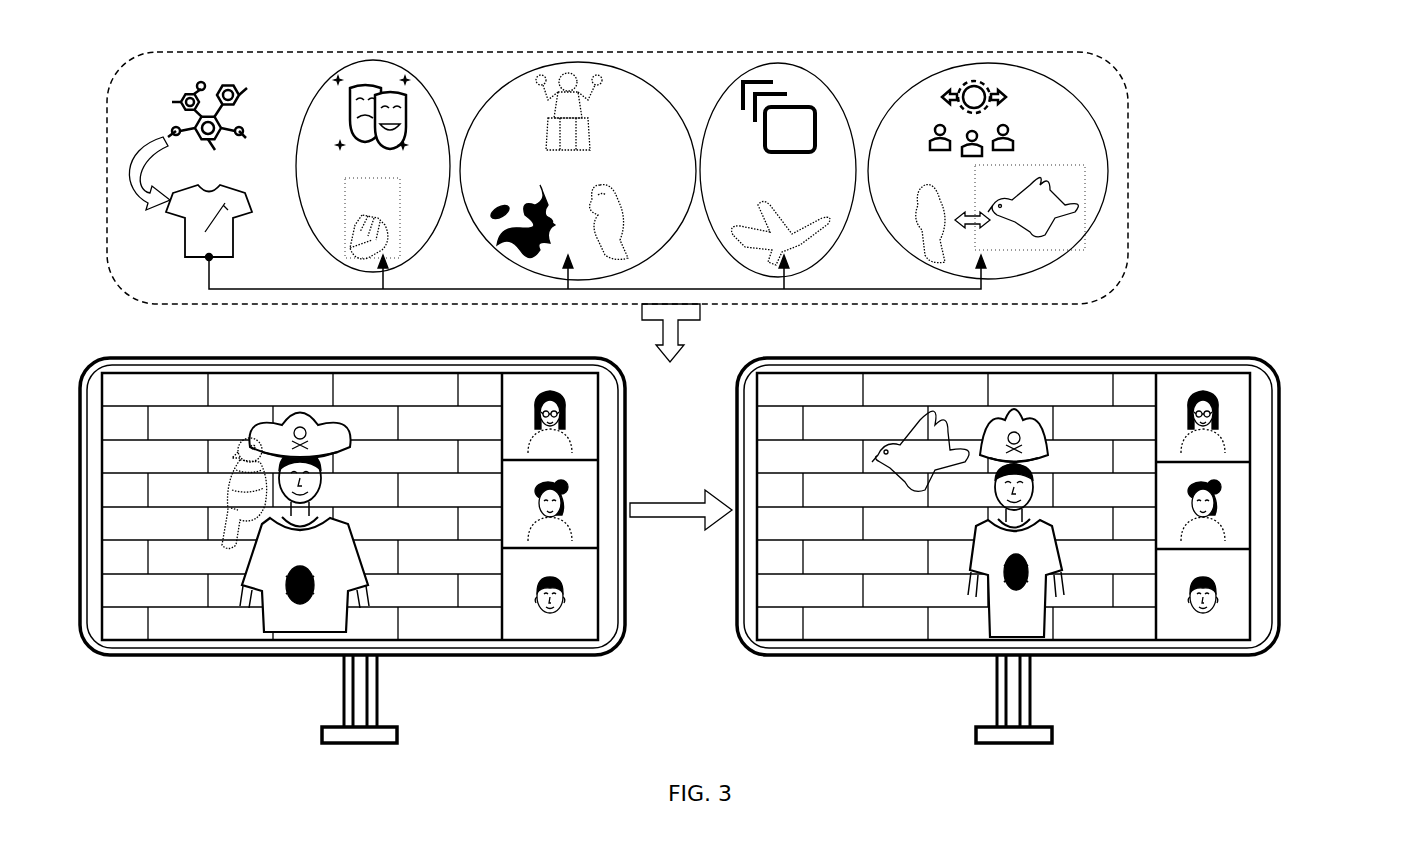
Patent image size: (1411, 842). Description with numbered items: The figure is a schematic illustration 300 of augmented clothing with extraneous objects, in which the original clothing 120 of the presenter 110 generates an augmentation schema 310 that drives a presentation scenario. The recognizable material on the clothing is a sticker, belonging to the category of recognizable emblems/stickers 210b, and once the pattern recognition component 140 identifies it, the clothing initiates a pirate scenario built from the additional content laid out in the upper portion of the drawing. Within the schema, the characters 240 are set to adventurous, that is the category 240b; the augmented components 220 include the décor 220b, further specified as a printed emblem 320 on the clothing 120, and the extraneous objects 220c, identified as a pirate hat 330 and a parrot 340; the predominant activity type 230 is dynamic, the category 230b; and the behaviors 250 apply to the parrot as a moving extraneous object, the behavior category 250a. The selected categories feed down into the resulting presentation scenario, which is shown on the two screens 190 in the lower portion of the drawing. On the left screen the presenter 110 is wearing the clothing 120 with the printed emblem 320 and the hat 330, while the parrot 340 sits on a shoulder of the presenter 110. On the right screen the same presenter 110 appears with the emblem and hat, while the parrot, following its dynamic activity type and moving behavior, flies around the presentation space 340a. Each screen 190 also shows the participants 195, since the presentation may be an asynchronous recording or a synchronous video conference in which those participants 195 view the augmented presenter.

The presenter 110 is at (320, 478).
The clothing 120 is at (345, 532).
The pattern recognition component 140 is at (185, 100).
The presentation screen 190 is at (1243, 348).
The participants 195 is at (1225, 503).
The recognizable emblems/stickers 210b is at (200, 222).
The augmented components 220 is at (548, 100).
The décor 220b is at (525, 247).
The extraneous objects 220c is at (600, 253).
The predominant activity type 230 is at (740, 95).
The dynamic activity type 230b is at (785, 255).
The characters 240 is at (333, 100).
The adventurous character 240b is at (345, 243).
The behaviors 250 is at (955, 85).
The moving extraneous objects behavior 250a is at (1045, 237).
The schematic illustration of augmented clothing with extraneous objects 300 is at (1393, 84).
The augmentation schema 310 is at (1128, 155).
The printed emblem 320 is at (300, 600).
The pirate hat 330 is at (268, 428).
The parrot 340 is at (240, 485).
The presentation space 340a is at (885, 466).